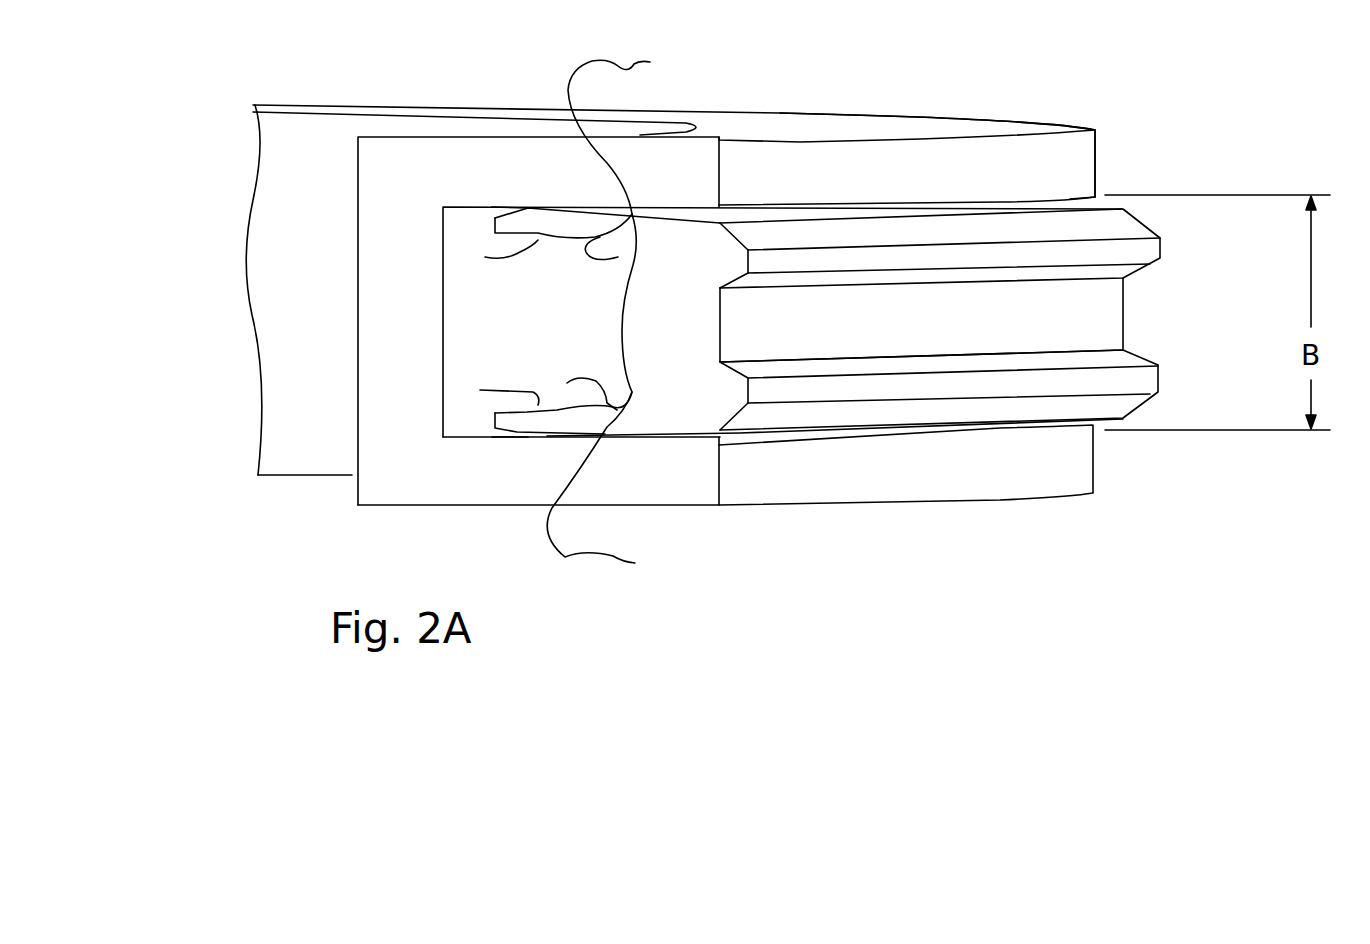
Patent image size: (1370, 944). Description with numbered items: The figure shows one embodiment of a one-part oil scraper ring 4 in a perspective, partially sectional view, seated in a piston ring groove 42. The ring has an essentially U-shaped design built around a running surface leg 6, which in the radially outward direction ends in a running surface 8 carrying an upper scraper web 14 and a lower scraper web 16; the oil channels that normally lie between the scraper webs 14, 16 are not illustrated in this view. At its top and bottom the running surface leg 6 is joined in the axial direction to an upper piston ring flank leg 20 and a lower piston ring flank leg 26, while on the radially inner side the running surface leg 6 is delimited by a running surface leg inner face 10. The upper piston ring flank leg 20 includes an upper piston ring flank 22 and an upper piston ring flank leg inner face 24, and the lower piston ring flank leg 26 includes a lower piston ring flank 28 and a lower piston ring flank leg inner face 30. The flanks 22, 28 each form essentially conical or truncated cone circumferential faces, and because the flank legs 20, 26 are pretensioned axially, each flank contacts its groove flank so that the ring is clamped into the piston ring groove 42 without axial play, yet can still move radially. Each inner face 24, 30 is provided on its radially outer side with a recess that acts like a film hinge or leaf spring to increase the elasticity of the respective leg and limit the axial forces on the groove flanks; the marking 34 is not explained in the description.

The running surface leg inner face 10 is at (622, 291).
The piston ring groove 42 is at (782, 322).
The upper piston ring flank 22 is at (1101, 209).
The oil scraper ring 4 is at (1142, 317).
The upper scraper web 14 is at (937, 248).
The running surface 8 is at (921, 320).
The lower scraper web 16 is at (936, 390).
The upper piston ring flank leg 20 is at (607, 234).
The lower piston ring flank leg 26 is at (563, 409).
The lower piston ring flank 28 is at (643, 437).
The running surface leg 6 is at (619, 316).
The upper piston ring flank leg inner face 24 is at (485, 257).
The lower piston ring flank leg inner face 30 is at (480, 390).
The lip edge 34 is at (505, 207).